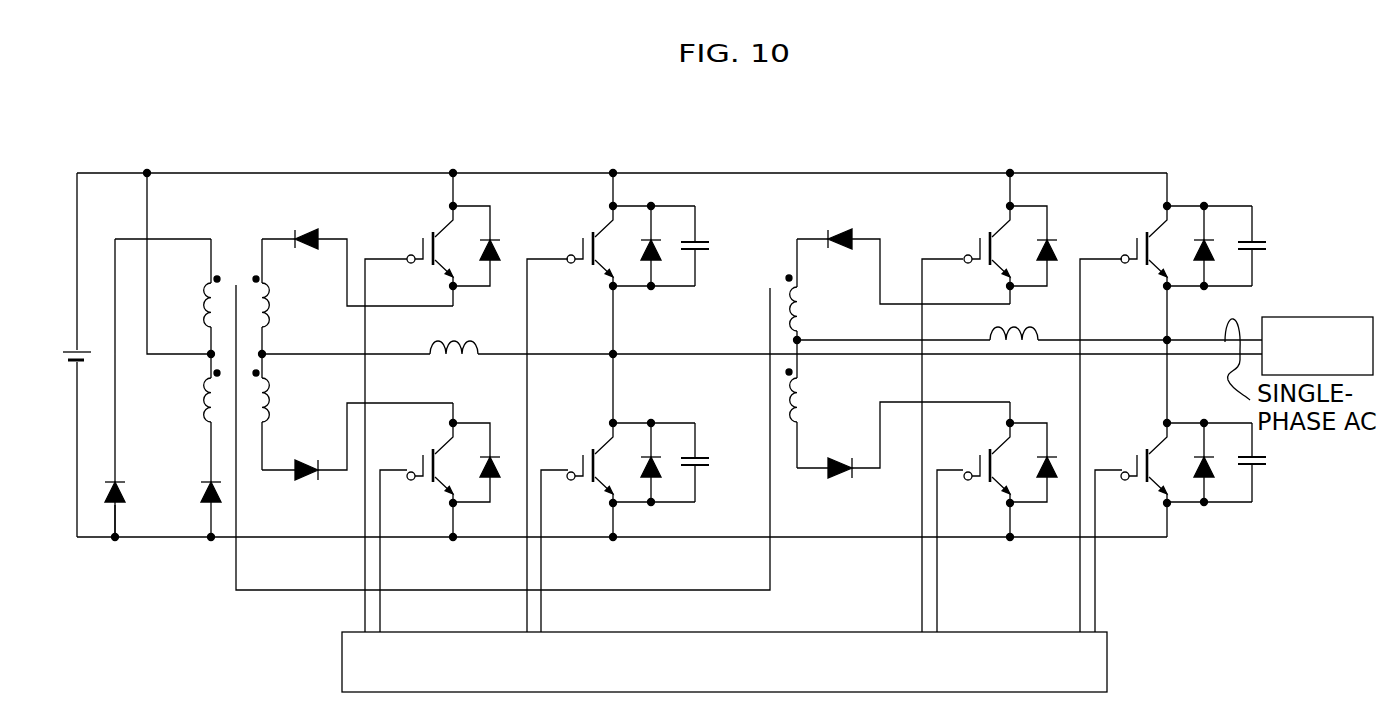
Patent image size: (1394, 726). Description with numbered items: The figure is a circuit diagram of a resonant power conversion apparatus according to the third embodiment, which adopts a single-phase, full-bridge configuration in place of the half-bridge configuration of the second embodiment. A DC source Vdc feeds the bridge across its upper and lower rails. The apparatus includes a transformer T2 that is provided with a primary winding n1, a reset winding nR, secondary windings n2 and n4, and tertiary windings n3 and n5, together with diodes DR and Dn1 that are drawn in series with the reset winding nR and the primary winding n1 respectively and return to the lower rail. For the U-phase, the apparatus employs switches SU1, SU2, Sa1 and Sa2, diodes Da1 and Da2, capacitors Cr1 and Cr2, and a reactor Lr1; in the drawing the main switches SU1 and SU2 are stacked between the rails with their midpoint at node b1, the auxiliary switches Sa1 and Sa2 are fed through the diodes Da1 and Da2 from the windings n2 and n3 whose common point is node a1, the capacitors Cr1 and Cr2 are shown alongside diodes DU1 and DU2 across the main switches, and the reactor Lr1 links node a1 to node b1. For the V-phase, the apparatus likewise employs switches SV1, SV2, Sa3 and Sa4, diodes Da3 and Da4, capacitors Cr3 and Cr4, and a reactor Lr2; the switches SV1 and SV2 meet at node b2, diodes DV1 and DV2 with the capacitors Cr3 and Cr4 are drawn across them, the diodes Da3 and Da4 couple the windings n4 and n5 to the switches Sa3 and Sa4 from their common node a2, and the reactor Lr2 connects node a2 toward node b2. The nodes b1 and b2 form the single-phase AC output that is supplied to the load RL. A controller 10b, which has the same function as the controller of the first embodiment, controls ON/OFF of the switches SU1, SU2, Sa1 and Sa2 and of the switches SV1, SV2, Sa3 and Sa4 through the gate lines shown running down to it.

The DC power supply Vdc is at (59, 339).
The transformer T2 is at (498, 402).
The reset winding nR is at (191, 296).
The primary winding n1 is at (192, 418).
The secondary winding n2 is at (278, 296).
The tertiary winding n3 is at (278, 412).
The secondary winding n4 is at (811, 289).
The tertiary winding n5 is at (811, 404).
The diode DR is at (135, 509).
The diode Dn1 is at (189, 492).
The diode Da1 is at (357, 249).
The diode Da2 is at (357, 458).
The diode Da3 is at (903, 248).
The diode Da4 is at (903, 458).
The switch Sa1 is at (432, 416).
The switch Sa2 is at (440, 526).
The switch Sa3 is at (989, 416).
The switch Sa4 is at (997, 526).
The switch SU1 is at (572, 416).
The switch SU2 is at (579, 526).
The switch SV1 is at (1125, 416).
The switch SV2 is at (1133, 526).
The freewheeling diode DU1 is at (656, 263).
The freewheeling diode DU2 is at (654, 448).
The freewheeling diode DV1 is at (1209, 229).
The freewheeling diode DV2 is at (1209, 480).
The capacitor Cr1 is at (718, 246).
The capacitor Cr2 is at (716, 462).
The capacitor Cr3 is at (1270, 244).
The capacitor Cr4 is at (1271, 463).
The reactor Lr1 is at (474, 333).
The reactor Lr2 is at (1030, 325).
The node a1 is at (264, 353).
The node a2 is at (828, 327).
The node b1 is at (615, 353).
The node b2 is at (1169, 339).
The load RL is at (1338, 317).
The controller 10b is at (1107, 660).